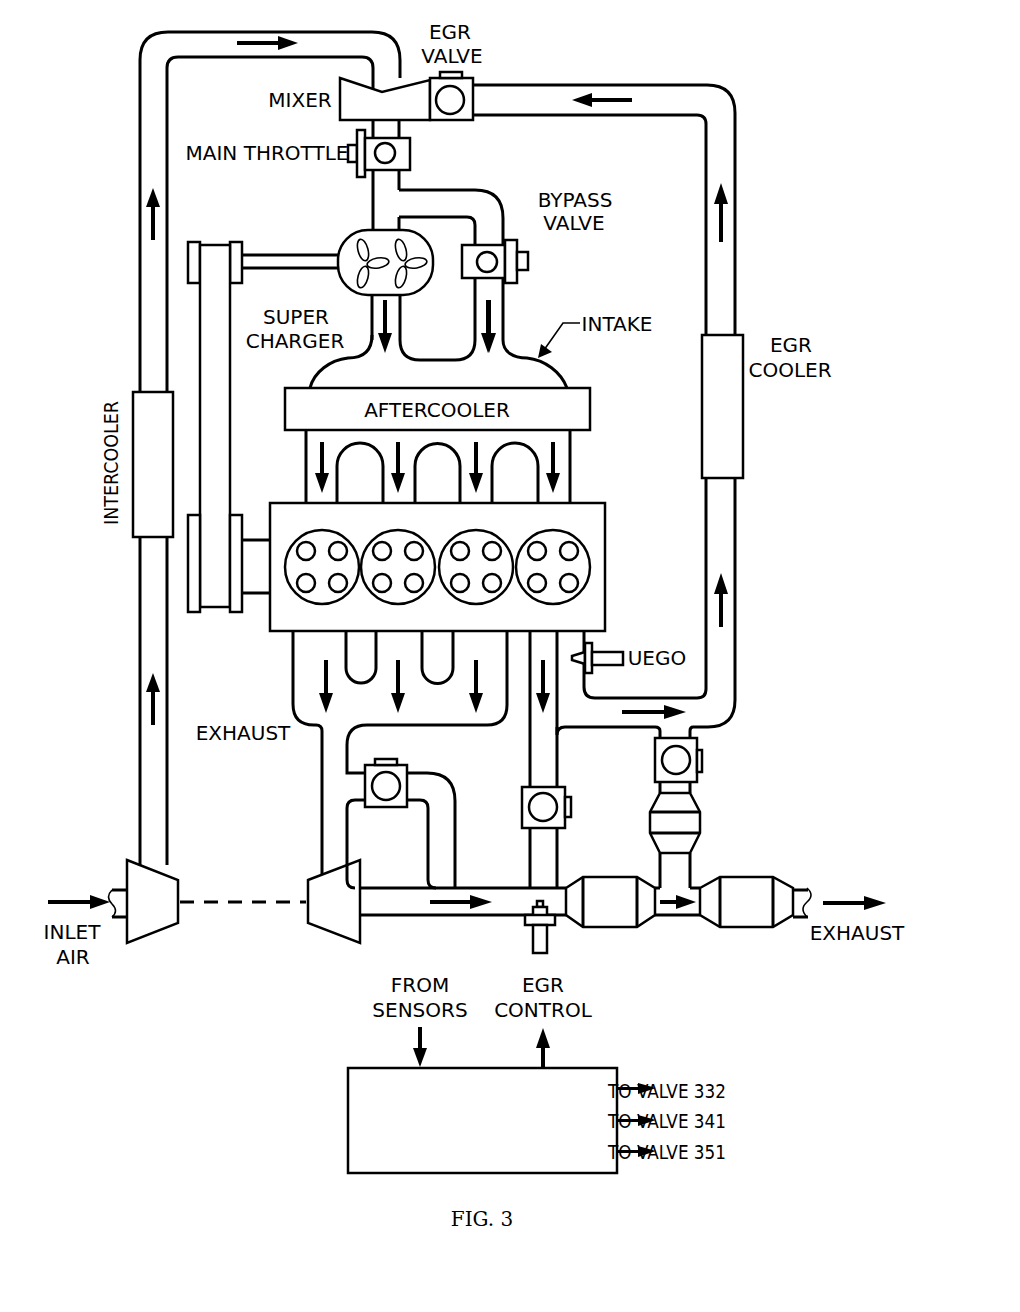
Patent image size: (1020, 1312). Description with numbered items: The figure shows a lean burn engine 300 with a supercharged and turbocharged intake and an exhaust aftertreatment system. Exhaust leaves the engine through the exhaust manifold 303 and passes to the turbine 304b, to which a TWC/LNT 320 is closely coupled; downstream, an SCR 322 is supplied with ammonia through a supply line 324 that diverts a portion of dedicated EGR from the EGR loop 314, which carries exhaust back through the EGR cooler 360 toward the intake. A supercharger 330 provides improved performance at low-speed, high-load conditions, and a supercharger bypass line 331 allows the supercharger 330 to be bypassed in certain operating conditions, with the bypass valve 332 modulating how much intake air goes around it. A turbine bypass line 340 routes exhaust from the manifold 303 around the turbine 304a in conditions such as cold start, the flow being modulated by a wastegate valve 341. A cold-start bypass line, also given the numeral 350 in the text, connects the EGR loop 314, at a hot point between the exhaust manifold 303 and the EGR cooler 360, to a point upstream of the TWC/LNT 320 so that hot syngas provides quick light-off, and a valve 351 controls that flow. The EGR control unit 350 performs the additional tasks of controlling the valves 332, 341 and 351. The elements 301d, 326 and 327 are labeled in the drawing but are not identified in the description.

The engine 300 is at (436, 574).
The cylinder 301d is at (590, 578).
The exhaust manifold 303 is at (292, 693).
The turbine 304a is at (155, 943).
The turbine 304b is at (335, 943).
The EGR loop 314 is at (738, 227).
The TWC/LNT device 320 is at (608, 927).
The SCR 322 is at (745, 927).
The supply line 324 is at (690, 868).
The valve 326 is at (702, 760).
The catalyst 327 is at (703, 822).
The supercharger 330 is at (340, 283).
The supercharger bypass line 331 is at (437, 188).
The bypass valve 332 is at (530, 262).
The turbine bypass line 340 is at (455, 847).
The wastegate valve 341 is at (388, 807).
The EGR control unit 350 is at (502, 1151).
The valve 351 is at (571, 812).
The EGR cooler 360 is at (745, 405).